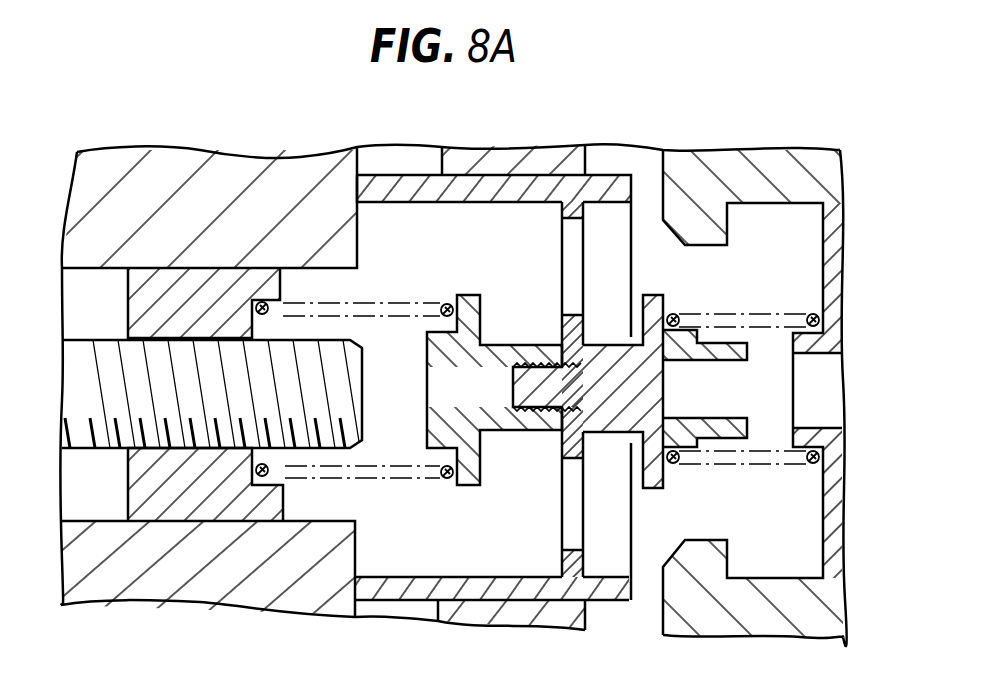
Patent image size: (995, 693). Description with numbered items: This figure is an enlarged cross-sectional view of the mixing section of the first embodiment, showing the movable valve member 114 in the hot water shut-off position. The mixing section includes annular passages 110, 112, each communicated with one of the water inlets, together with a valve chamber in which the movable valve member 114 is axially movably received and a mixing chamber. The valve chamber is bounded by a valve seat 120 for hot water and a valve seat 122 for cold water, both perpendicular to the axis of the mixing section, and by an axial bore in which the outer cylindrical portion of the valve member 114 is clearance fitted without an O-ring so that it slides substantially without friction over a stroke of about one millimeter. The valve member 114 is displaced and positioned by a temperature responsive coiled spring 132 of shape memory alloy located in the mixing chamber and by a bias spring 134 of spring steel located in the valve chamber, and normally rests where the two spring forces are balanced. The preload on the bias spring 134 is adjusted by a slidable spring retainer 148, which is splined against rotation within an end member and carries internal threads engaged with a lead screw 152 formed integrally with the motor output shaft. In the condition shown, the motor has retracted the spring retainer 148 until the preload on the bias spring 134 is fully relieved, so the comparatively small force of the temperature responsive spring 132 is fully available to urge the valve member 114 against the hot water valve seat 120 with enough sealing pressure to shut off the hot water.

The annular passage 110 is at (420, 607).
The annular passage 112 is at (625, 622).
The movable valve member 114 is at (542, 187).
The valve seat for hot water 120 is at (357, 547).
The valve seat for cold water 122 is at (660, 190).
The temperature responsive coiled spring 132 is at (752, 313).
The bias spring 134 is at (368, 303).
The slidable spring retainer 148 is at (210, 503).
The lead screw 152 is at (103, 360).